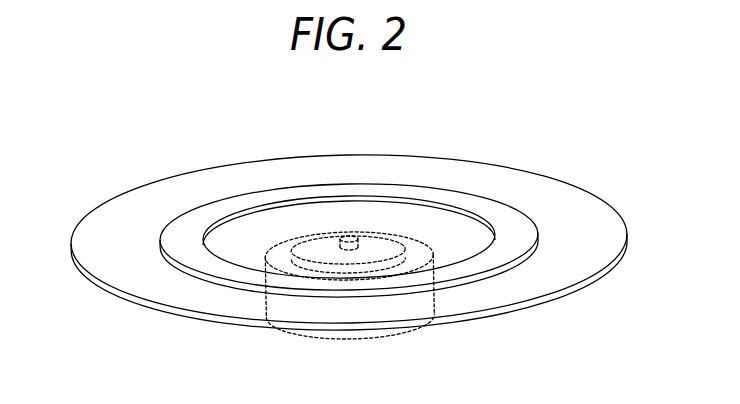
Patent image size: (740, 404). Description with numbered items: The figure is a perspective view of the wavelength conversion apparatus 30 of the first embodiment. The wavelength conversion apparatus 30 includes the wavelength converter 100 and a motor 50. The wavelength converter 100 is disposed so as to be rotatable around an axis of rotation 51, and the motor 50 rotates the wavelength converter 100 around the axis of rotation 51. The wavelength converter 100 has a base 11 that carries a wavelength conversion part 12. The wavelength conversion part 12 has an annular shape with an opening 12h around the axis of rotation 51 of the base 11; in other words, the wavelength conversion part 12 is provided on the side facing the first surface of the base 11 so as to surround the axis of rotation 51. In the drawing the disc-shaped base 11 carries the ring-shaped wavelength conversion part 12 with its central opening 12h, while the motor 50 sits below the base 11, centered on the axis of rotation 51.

The wavelength converter 100 is at (349, 225).
The wavelength conversion apparatus 30 is at (349, 201).
The base 11 is at (560, 200).
The wavelength conversion part 12 is at (210, 207).
The opening 12h is at (283, 221).
The motor 50 is at (327, 341).
The axis of rotation 51 is at (349, 236).